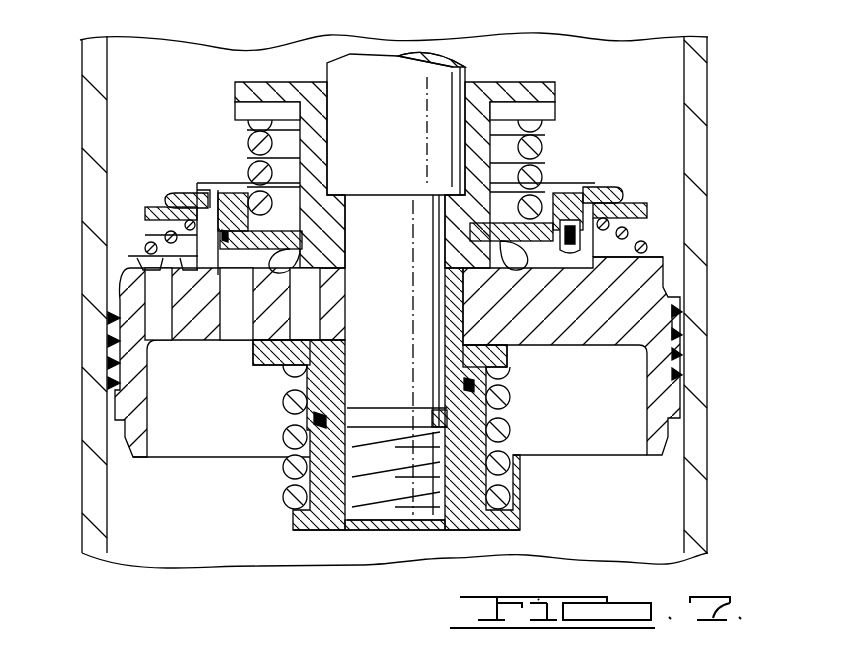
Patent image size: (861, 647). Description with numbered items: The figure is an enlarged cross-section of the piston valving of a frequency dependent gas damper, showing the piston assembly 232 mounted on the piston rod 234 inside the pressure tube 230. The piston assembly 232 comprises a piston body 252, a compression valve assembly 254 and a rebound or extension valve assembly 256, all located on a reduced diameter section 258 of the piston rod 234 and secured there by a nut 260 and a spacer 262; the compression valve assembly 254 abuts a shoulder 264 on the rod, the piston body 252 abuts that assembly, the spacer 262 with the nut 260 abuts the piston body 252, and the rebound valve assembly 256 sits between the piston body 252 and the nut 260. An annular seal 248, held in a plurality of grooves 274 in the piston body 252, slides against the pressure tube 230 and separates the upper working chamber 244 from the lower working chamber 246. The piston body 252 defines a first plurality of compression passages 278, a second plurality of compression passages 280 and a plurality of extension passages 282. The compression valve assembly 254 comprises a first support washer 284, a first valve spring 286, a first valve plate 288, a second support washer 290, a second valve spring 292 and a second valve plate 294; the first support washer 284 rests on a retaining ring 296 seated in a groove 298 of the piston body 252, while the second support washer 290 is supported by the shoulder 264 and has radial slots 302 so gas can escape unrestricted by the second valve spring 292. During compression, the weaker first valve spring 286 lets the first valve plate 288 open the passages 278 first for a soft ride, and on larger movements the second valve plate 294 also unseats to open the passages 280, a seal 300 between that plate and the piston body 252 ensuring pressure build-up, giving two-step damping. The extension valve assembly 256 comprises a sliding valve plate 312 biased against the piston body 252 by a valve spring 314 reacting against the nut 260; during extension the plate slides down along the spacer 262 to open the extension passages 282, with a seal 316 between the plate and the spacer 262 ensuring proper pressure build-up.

The pressure tube 230 is at (697, 524).
The piston assembly 232 is at (270, 532).
The piston rod 234 is at (415, 129).
The upper working chamber 244 is at (170, 81).
The lower working chamber 246 is at (628, 505).
The seal 248 is at (680, 343).
The piston body 252 is at (663, 405).
The compression valve assembly 254 is at (604, 126).
The rebound or extension valve assembly 256 is at (268, 438).
The reduced diameter section 258 is at (415, 312).
The nut 260 is at (513, 522).
The spacer 262 is at (318, 420).
The shoulder 264 is at (378, 198).
The grooves 274 is at (678, 372).
The first plurality of compression passages 278 is at (150, 318).
The second plurality of compression passages 280 is at (232, 330).
The extension passages 282 is at (272, 348).
The first support washer 284 is at (145, 212).
The first valve spring 286 is at (165, 237).
The first valve plate 288 is at (145, 249).
The second support washer 290 is at (268, 92).
The second valve spring 292 is at (252, 136).
The second valve plate 294 is at (557, 247).
The retaining ring 296 is at (178, 193).
The groove 298 is at (205, 192).
The seal 300 is at (577, 237).
The radial slots 302 is at (512, 104).
The sliding valve plate 312 is at (542, 360).
The valve spring 314 is at (513, 436).
The seal 316 is at (513, 393).